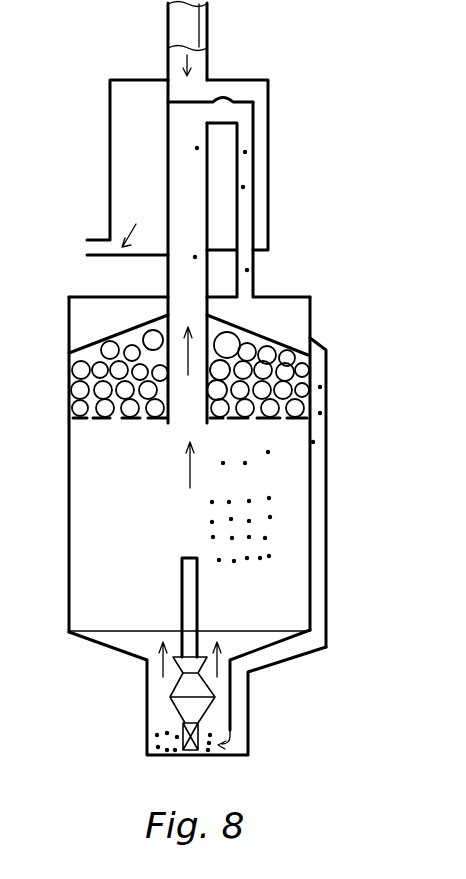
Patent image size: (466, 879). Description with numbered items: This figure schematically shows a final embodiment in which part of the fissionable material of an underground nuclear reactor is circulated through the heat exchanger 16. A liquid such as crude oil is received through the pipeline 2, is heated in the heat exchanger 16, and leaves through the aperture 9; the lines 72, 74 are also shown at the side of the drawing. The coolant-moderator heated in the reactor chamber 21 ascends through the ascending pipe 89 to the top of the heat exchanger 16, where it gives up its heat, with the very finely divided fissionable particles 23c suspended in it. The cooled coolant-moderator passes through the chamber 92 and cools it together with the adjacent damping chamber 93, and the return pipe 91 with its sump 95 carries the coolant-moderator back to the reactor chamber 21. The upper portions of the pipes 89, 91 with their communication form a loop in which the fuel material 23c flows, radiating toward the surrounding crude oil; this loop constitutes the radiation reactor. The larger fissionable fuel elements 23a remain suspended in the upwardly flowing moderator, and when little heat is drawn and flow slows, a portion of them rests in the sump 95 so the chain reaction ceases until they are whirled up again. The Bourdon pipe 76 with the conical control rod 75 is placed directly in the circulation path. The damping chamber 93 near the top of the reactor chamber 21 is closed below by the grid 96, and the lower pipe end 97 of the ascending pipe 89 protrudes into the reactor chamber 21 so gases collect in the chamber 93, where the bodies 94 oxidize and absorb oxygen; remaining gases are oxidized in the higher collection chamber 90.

The pipeline 2 is at (200, 28).
The aperture 9 is at (90, 247).
The heat exchanger 16 is at (127, 147).
The reactor chamber 21 is at (0, 525).
The fissionable fuel elements 23a is at (212, 522).
The fissionable particles 23c is at (247, 152).
The line 72 is at (8, 39).
The line 74 is at (16, 81).
The conical control rod 75 is at (188, 583).
The Bourdon pipe 76 is at (187, 705).
The ascending pipe 89 is at (183, 182).
The collection chamber 90 is at (228, 100).
The return pipe 91 is at (256, 270).
The chamber 92 is at (283, 310).
The damping chamber 93 is at (300, 358).
The bodies 94 is at (300, 362).
The sump 95 is at (217, 712).
The grid 96 is at (103, 420).
The lower pipe end 97 is at (170, 424).